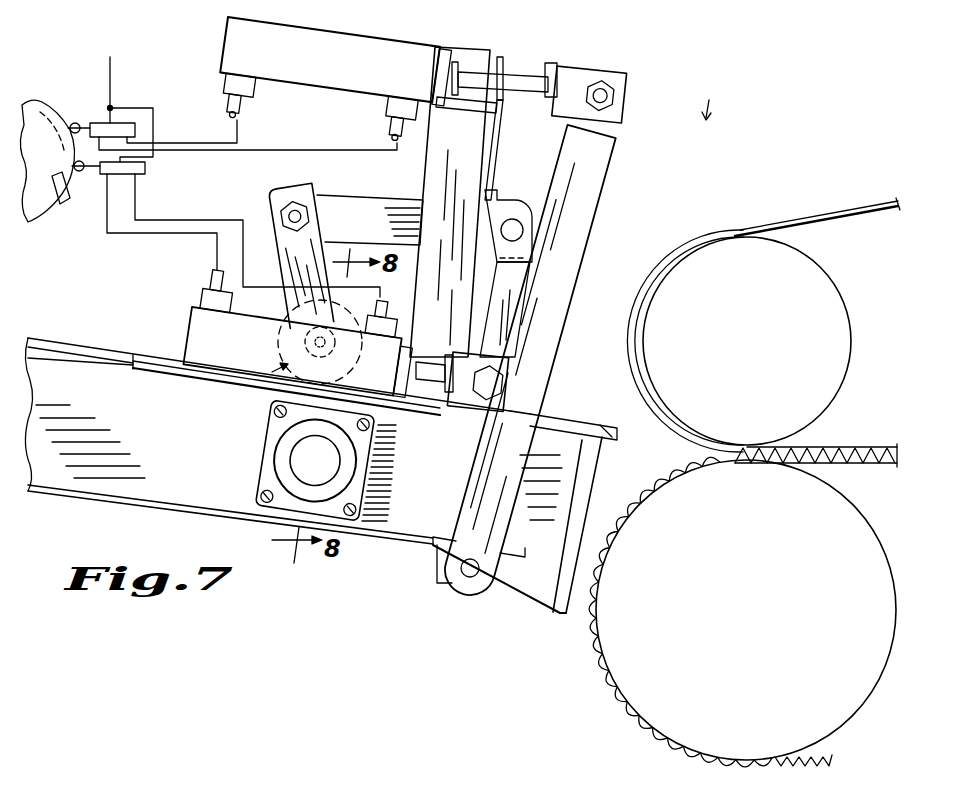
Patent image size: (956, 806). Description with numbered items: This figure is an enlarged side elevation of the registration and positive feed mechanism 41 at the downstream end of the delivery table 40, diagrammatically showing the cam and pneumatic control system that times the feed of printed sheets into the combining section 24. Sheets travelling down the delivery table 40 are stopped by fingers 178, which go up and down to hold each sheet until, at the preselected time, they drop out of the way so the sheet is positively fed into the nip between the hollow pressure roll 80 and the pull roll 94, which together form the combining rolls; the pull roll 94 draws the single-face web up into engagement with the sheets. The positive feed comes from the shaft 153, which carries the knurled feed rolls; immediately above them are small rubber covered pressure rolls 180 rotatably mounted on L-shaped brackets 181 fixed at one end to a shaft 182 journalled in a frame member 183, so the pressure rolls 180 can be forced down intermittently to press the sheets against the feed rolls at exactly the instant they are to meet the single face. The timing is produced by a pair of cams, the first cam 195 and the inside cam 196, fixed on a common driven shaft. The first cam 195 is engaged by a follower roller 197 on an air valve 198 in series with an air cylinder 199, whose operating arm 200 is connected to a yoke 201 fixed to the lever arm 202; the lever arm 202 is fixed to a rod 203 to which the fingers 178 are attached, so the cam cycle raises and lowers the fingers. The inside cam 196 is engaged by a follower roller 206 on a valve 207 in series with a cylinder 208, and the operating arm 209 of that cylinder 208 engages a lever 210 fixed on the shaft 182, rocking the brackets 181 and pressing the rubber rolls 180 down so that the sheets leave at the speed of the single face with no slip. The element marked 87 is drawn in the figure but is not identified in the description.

The combining section 24 is at (714, 98).
The delivery table 40 is at (90, 418).
The registration and positive feed mechanism 41 is at (240, 390).
The hollow pressure roll 80 is at (851, 322).
The web 87 is at (877, 208).
The pull roll 94 is at (862, 712).
The shaft 153 is at (320, 460).
The fingers 178 is at (598, 462).
The rubber covered pressure rolls 180 is at (282, 339).
The L-shaped brackets 181 is at (355, 208).
The shaft 182 is at (515, 225).
The frame member 183 is at (455, 202).
The first cam 195 is at (46, 207).
The inside cam 196 is at (70, 212).
The follower roller 197 is at (73, 121).
The air valve 198 is at (120, 123).
The air cylinder 199 is at (333, 81).
The operating arm 200 is at (505, 78).
The yoke 201 is at (594, 72).
The lever arm 202 is at (600, 183).
The rod 203 is at (473, 580).
The follower roller 206 is at (72, 162).
The valve 207 is at (148, 170).
The cylinder 208 is at (178, 322).
The operating arm 209 is at (444, 402).
The lever 210 is at (512, 305).